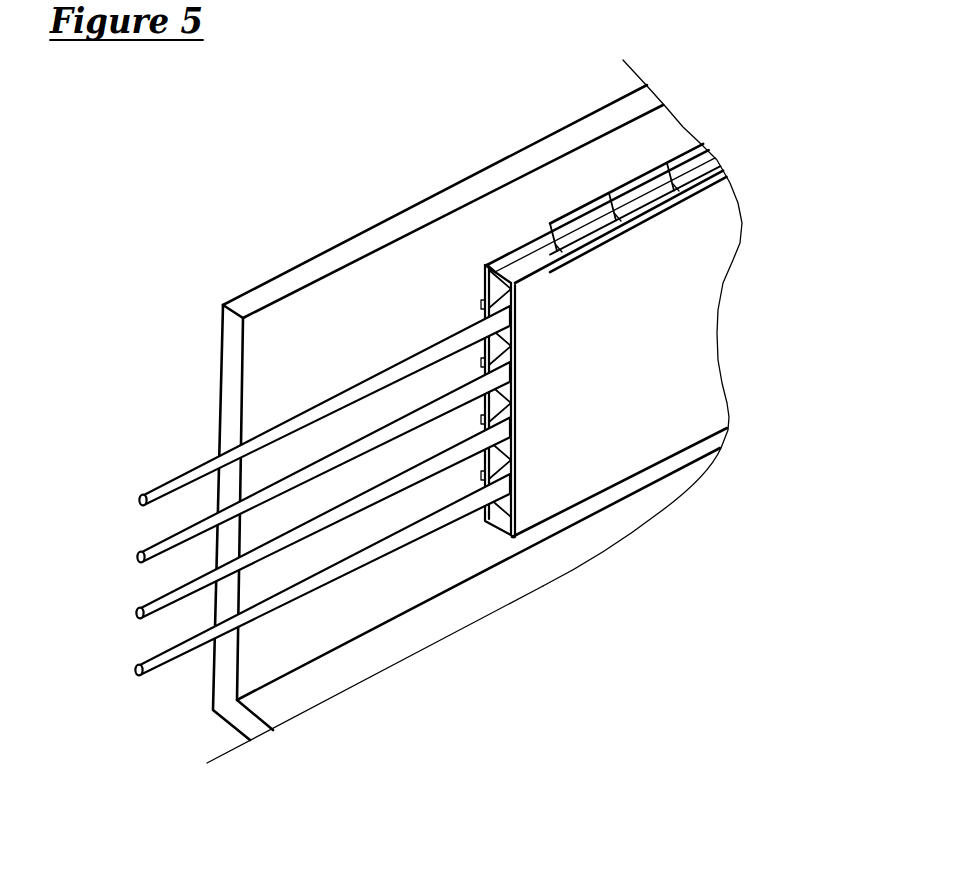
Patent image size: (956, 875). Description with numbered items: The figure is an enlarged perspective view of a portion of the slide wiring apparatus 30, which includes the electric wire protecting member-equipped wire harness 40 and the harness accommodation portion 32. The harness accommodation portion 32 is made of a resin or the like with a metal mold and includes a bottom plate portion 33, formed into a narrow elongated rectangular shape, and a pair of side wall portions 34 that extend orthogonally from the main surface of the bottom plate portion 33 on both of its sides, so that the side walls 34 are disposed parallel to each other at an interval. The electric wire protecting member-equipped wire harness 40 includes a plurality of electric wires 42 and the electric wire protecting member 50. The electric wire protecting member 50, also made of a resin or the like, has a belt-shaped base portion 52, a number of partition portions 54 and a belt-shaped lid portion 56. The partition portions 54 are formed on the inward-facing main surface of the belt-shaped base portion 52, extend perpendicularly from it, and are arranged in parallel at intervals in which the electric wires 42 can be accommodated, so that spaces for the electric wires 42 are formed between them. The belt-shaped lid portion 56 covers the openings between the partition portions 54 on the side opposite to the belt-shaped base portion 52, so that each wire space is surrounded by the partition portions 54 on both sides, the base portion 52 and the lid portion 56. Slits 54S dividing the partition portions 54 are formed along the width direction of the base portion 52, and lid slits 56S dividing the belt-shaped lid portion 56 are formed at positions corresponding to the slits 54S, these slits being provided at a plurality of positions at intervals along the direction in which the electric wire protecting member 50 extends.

The slide wiring apparatus 30 is at (456, 435).
The harness accommodation portion 32 is at (248, 288).
The bottom plate portion 33 is at (293, 708).
The side wall portions 34 is at (408, 250).
The electric wire protecting member-equipped wire harness 40 is at (463, 367).
The electric wires 42 is at (186, 641).
The electric wire protecting member 50 is at (636, 323).
The belt-shaped base portion 52 is at (707, 373).
The partition portions 54 is at (514, 316).
The slits 54S is at (670, 185).
The belt-shaped lid portion 56 is at (615, 204).
The lid slits 56S is at (548, 240).